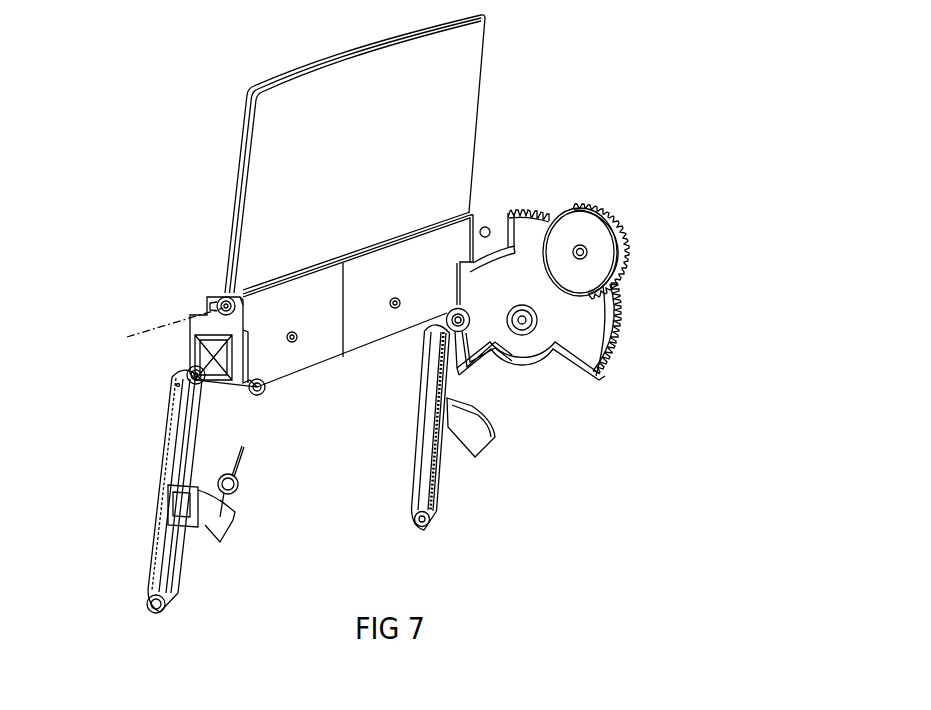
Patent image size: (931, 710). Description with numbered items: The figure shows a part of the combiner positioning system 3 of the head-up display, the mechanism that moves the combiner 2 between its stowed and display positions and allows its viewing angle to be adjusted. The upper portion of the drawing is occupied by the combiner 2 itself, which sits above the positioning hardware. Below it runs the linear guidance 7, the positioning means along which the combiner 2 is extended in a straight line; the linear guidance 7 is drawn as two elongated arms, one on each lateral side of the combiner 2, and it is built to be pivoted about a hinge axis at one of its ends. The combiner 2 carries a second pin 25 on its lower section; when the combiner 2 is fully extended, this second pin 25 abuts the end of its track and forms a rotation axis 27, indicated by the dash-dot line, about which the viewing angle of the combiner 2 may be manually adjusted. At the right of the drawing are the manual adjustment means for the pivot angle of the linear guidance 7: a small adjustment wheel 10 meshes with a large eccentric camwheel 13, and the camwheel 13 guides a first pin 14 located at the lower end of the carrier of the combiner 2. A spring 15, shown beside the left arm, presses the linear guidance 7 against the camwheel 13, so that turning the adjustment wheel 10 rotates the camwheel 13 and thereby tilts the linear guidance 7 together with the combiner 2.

The combiner 2 is at (437, 105).
The combiner positioning system 3 is at (596, 50).
The linear guidance 7 is at (155, 523).
The adjustment wheel 10 is at (607, 214).
The eccentric camwheel 13 is at (618, 327).
The first pin 14 is at (200, 378).
The spring 15 is at (239, 487).
The second pin 25 is at (223, 300).
The rotation axis 27 is at (153, 330).